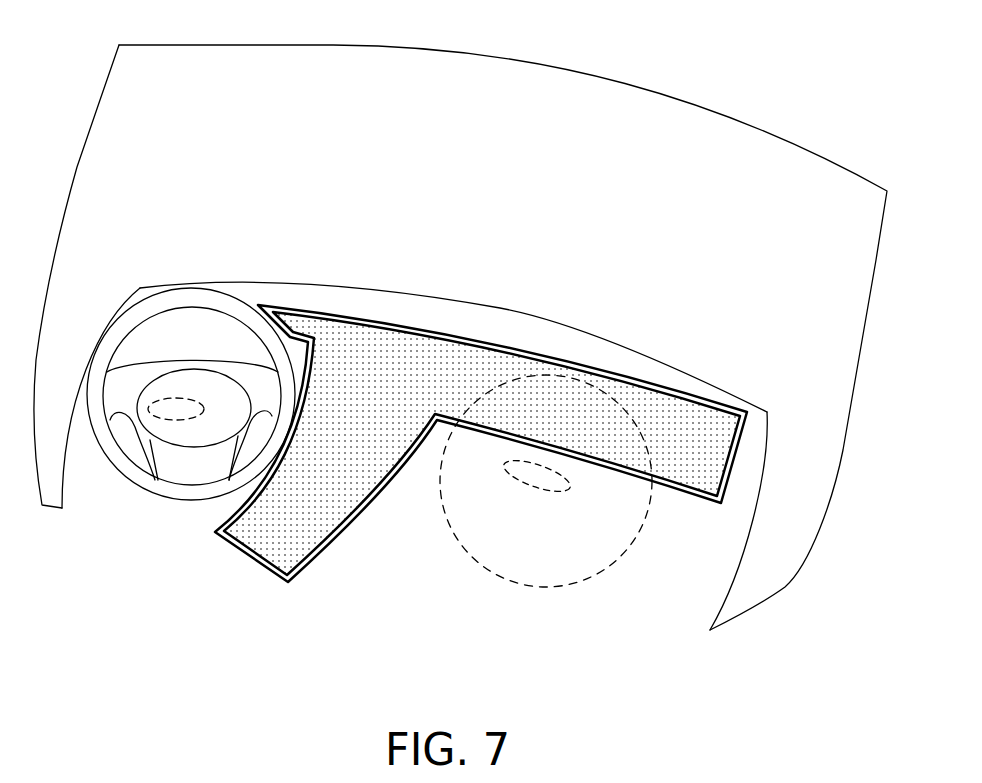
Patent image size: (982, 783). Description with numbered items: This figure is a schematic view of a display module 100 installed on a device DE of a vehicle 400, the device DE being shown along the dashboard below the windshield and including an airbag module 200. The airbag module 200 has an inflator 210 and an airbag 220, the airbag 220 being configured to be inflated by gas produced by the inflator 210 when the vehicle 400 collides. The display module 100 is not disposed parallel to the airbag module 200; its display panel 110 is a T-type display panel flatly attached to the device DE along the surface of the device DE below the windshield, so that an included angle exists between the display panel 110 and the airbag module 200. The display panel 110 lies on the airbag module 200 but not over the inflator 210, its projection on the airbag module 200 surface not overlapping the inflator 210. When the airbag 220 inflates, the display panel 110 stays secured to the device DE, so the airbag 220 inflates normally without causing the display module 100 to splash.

The vehicle 400 is at (738, 202).
The display module 100 is at (481, 397).
The display panel 110 is at (395, 347).
The airbag module 200 is at (549, 551).
The inflator 210 is at (520, 478).
The airbag 220 is at (563, 570).
The device DE is at (670, 383).